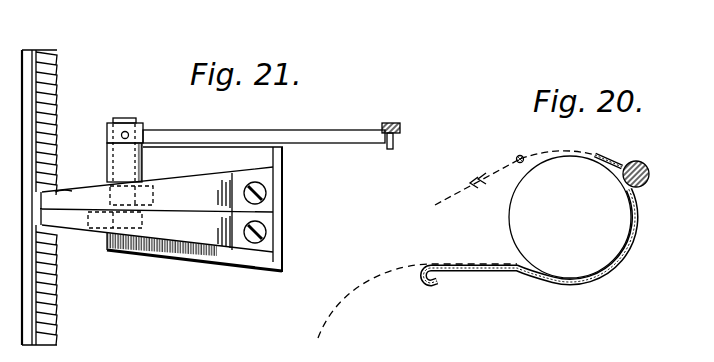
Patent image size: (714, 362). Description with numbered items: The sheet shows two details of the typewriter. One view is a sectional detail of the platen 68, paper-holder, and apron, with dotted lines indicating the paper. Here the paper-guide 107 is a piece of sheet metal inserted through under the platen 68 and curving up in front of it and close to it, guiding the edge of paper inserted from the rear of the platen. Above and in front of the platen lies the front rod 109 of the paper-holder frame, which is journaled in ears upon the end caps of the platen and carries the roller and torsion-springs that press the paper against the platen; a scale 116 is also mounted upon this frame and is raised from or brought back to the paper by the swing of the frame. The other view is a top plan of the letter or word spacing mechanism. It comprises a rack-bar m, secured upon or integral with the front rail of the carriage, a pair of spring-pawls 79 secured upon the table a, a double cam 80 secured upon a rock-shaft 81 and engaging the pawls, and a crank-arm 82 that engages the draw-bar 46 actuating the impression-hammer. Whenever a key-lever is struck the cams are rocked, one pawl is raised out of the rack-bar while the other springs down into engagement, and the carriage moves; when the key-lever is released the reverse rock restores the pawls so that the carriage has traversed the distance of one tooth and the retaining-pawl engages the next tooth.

In FIG. 21, the rack-bar m is at (53, 197).
In FIG. 21, the table a is at (161, 220).
In FIG. 21, the spring-pawls 79 is at (221, 212).
In FIG. 21, the double cam 80 is at (151, 188).
In FIG. 21, the rock-shaft 81 is at (127, 138).
In FIG. 21, the crank-arm 82 is at (264, 124).
In FIG. 21, the draw-bar 46 is at (377, 126).
In FIG. 20, the platen 68 is at (570, 217).
In FIG. 20, the paper-guide 107 is at (488, 244).
In FIG. 20, the front rod 109 is at (659, 180).
In FIG. 20, the scale 116 is at (619, 149).